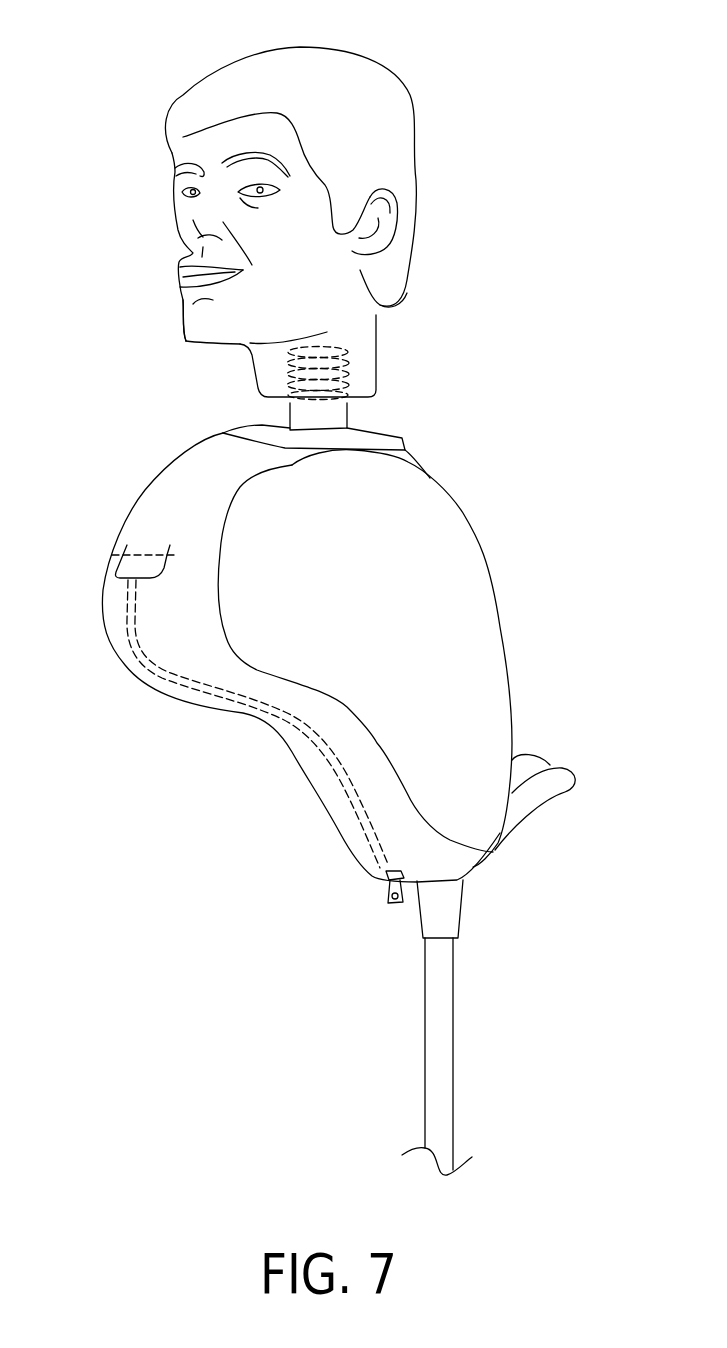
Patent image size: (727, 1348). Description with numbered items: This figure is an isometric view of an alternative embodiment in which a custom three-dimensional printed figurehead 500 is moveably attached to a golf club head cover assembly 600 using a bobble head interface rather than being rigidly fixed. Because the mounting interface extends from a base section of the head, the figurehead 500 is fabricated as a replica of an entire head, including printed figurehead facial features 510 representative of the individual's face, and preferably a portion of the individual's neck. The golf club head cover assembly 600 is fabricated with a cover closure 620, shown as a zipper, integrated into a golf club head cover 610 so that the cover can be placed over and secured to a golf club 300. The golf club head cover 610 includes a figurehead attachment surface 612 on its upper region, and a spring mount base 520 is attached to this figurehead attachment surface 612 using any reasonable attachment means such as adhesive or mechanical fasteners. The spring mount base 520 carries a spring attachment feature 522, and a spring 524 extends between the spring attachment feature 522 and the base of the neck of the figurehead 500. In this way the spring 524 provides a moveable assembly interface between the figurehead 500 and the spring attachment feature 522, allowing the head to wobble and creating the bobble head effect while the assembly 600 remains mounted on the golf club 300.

The custom three-dimensional printed figurehead 500 is at (125, 72).
The printed figurehead facial features 510 is at (186, 341).
The spring mount base 520 is at (275, 425).
The spring attachment feature 522 is at (338, 418).
The spring 524 is at (347, 378).
The golf club head cover assembly 600 is at (176, 817).
The golf club head cover 610 is at (447, 627).
The figurehead attachment surface 612 is at (228, 452).
The cover closure 620 is at (238, 704).
The golf club 300 is at (425, 1053).